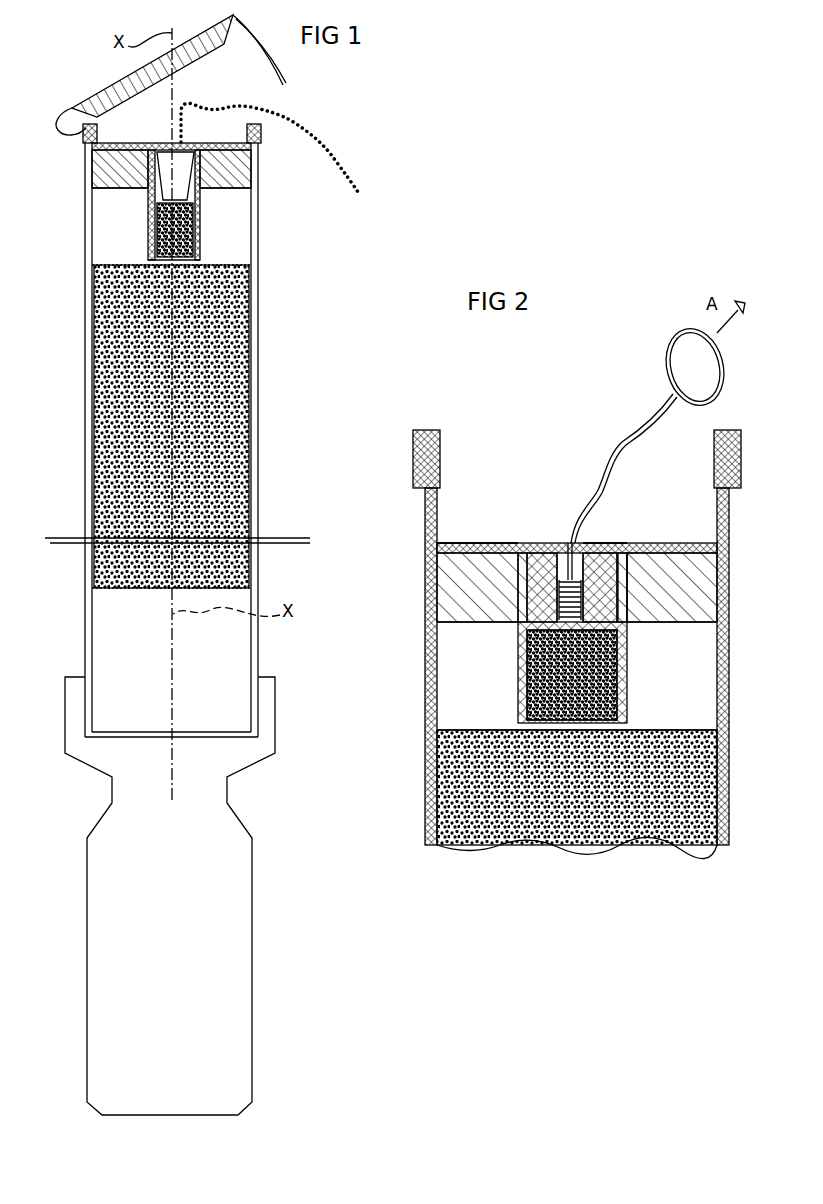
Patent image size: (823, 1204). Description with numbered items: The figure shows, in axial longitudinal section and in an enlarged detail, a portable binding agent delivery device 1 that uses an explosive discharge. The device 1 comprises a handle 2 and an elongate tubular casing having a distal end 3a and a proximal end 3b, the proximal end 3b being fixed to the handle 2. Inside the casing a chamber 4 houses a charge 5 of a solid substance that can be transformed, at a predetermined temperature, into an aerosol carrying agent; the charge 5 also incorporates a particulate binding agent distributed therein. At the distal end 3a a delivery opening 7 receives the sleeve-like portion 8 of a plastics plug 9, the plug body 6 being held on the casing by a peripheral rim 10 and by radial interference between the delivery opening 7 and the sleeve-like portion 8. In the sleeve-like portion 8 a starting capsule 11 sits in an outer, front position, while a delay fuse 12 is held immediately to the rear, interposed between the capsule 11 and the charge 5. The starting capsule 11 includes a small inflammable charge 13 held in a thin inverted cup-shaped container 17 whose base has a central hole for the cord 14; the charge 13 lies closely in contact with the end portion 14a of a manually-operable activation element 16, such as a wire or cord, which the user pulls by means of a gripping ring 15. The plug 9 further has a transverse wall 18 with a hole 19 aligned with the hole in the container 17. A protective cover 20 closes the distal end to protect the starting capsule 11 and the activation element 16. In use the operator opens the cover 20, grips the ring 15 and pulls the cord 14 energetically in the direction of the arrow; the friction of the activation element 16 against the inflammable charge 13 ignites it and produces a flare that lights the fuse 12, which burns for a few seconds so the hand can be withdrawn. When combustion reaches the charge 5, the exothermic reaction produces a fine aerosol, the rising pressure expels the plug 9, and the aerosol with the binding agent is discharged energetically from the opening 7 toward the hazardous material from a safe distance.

In FIG. 1, the portable binding agent delivery device 1 is at (292, 652).
In FIG. 1, the handle 2 is at (87, 937).
In FIG. 1, the distal end 3a is at (85, 223).
In FIG. 2, the distal end 3a is at (430, 637).
In FIG. 1, the proximal end 3b is at (86, 638).
In FIG. 1, the chamber 4 is at (249, 366).
In FIG. 2, the chamber 4 is at (457, 713).
In FIG. 1, the charge 5 is at (218, 510).
In FIG. 2, the charge 5 is at (432, 812).
In FIG. 1, the closure insert 6 is at (115, 170).
In FIG. 2, the closure insert 6 is at (707, 593).
In FIG. 1, the delivery opening 7 is at (108, 194).
In FIG. 2, the delivery opening 7 is at (518, 625).
In FIG. 2, the sleeve-like portion 8 is at (627, 654).
In FIG. 2, the plug 9 is at (470, 541).
In FIG. 1, the peripheral rim 10 is at (263, 137).
In FIG. 2, the peripheral rim 10 is at (414, 459).
In FIG. 1, the starting capsule 11 is at (180, 167).
In FIG. 2, the starting capsule 11 is at (545, 542).
In FIG. 1, the delay fuse 12 is at (148, 245).
In FIG. 2, the delay fuse 12 is at (627, 690).
In FIG. 2, the inflammable charge 13 is at (630, 622).
In FIG. 1, the cord 14 is at (330, 149).
In FIG. 2, the cord 14 is at (617, 453).
In FIG. 2, the pull cord end 14a is at (521, 617).
In FIG. 2, the gripping ring 15 is at (667, 358).
In FIG. 2, the manually-operable activation element 16 is at (630, 590).
In FIG. 2, the inverted cup-shaped container 17 is at (600, 545).
In FIG. 2, the transverse wall 18 is at (508, 542).
In FIG. 2, the hole 19 is at (568, 542).
In FIG. 1, the protective cover 20 is at (107, 81).